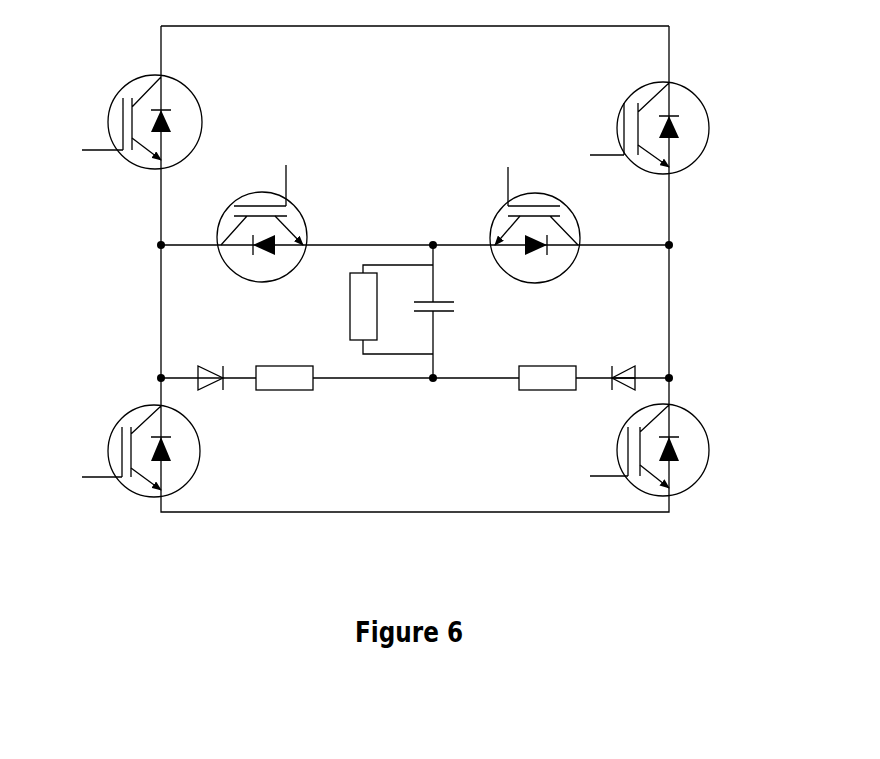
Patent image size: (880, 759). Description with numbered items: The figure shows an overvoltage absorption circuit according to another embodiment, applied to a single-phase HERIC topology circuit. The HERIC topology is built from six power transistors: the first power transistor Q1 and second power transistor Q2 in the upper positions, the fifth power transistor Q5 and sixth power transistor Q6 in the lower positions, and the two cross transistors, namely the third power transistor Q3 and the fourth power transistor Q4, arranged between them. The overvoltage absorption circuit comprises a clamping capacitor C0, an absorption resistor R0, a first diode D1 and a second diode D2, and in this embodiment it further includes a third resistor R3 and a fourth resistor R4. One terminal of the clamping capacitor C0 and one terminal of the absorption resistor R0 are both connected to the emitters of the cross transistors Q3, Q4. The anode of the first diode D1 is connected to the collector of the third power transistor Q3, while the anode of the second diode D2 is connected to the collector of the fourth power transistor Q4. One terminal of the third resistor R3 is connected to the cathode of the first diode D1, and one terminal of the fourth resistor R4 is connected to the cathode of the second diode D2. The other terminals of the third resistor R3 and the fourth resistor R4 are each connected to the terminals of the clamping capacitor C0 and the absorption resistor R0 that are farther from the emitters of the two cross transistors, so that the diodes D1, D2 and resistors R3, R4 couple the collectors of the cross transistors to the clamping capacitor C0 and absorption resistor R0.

The first power transistor Q1 is at (123, 129).
The second power transistor Q2 is at (681, 128).
The third power transistor Q3 is at (283, 211).
The fourth power transistor Q4 is at (521, 211).
The fifth power transistor Q5 is at (123, 466).
The sixth power transistor Q6 is at (639, 467).
The absorption resistor R0 is at (368, 309).
The clamping capacitor C0 is at (454, 311).
The first diode D1 is at (212, 361).
The second diode D2 is at (625, 362).
The third resistor R3 is at (284, 398).
The fourth resistor R4 is at (547, 398).